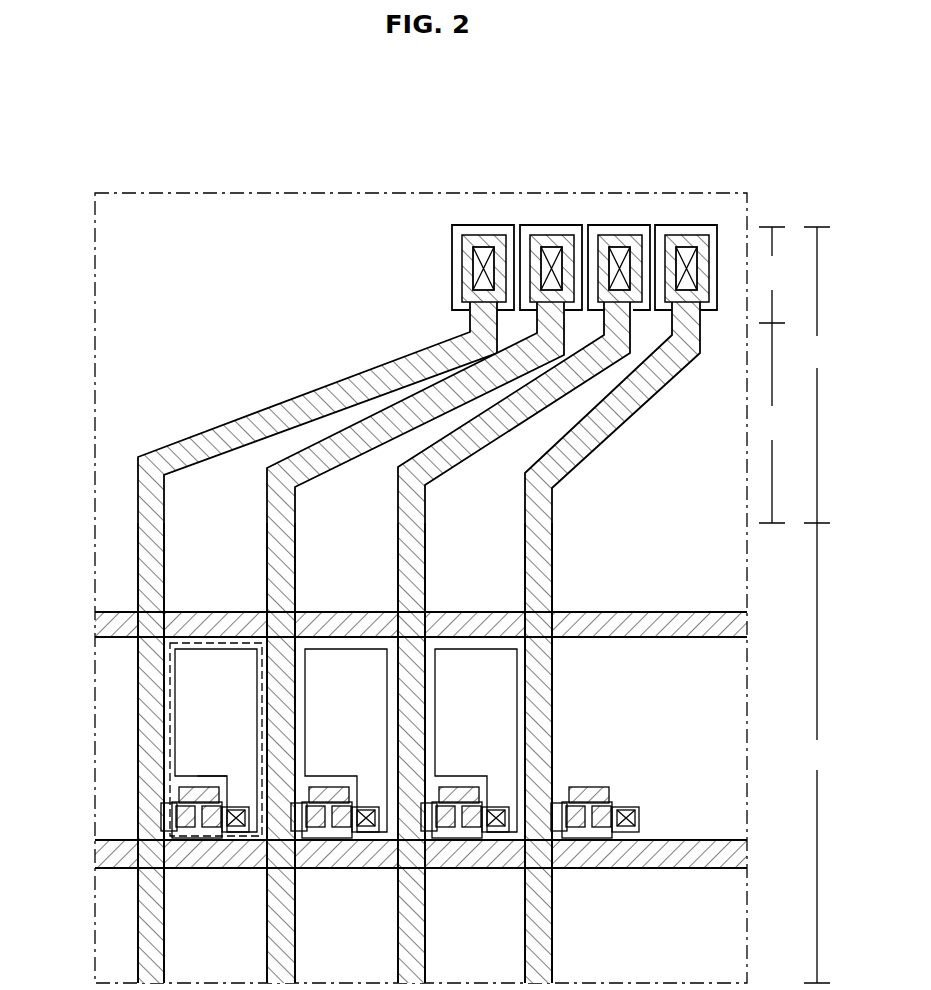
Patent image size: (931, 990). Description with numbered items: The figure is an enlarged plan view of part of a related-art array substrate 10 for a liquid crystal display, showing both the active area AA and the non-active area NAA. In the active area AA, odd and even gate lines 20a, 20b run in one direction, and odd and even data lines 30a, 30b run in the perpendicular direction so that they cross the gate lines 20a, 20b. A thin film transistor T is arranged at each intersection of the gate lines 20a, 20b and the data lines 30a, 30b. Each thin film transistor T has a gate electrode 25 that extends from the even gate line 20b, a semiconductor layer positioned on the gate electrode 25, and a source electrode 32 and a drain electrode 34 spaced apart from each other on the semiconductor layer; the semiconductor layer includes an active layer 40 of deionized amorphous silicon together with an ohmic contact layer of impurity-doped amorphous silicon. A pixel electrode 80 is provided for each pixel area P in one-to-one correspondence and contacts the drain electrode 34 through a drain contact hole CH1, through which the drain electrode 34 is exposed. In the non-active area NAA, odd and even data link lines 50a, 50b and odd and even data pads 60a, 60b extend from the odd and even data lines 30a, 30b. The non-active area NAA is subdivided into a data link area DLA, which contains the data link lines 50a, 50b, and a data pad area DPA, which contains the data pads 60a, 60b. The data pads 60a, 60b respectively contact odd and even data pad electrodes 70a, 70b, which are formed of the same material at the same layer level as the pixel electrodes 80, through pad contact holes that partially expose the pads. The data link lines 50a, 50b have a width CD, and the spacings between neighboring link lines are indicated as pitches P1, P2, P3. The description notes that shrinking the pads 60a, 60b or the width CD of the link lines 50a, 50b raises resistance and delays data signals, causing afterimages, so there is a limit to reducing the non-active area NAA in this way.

The substrate 10 is at (705, 954).
The odd gate line 20a is at (635, 625).
The even gate line 20b is at (650, 847).
The gate electrode 25 is at (200, 786).
The odd data line 30a is at (150, 688).
The even data line 30b is at (283, 693).
The source electrode 32 is at (186, 798).
The drain electrode 34 is at (232, 805).
The active layer 40 is at (180, 868).
The odd data link line 50a is at (240, 432).
The even data link line 50b is at (360, 427).
The odd data pad 60a is at (490, 236).
The even data pad 60b is at (558, 236).
The odd data pad electrode 70a is at (500, 226).
The even data pad electrode 70b is at (568, 226).
The pixel electrode 80 is at (242, 711).
The drain contact hole CH1 is at (237, 832).
The thin film transistor T is at (212, 824).
The pixel area P is at (262, 663).
The width of data link lines CD is at (514, 382).
The first pitch P1 is at (318, 443).
The second pitch P2 is at (435, 443).
The third pitch P3 is at (560, 443).
The data pad area DPA is at (771, 275).
The data link area DLA is at (771, 423).
The non-active area NAA is at (816, 375).
The active area AA is at (816, 753).